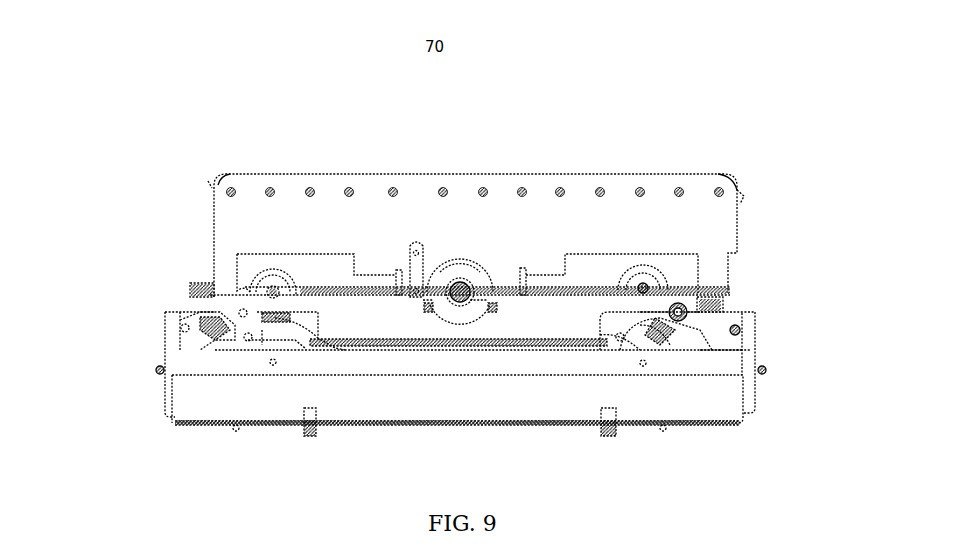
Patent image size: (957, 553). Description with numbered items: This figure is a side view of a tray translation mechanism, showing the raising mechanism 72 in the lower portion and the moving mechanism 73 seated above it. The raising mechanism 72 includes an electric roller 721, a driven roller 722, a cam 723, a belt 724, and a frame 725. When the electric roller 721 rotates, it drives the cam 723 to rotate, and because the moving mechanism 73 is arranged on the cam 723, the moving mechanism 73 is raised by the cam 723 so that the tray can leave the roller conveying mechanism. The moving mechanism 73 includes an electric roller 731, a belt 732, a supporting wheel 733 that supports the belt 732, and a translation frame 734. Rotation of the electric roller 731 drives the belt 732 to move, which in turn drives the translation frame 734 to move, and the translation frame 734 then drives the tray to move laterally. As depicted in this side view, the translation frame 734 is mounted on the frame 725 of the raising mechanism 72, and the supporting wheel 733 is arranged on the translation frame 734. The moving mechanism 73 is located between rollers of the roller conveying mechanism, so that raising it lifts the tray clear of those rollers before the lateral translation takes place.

The raising mechanism 72 is at (765, 385).
The moving mechanism 73 is at (740, 212).
The electric roller 721 is at (650, 343).
The driven roller 722 is at (267, 345).
The cam 723 is at (263, 323).
The belt 724 is at (510, 338).
The frame 725 is at (728, 348).
The electric roller 731 is at (267, 277).
The belt 732 is at (567, 171).
The supporting wheel 733 is at (300, 190).
The translation frame 734 is at (237, 232).